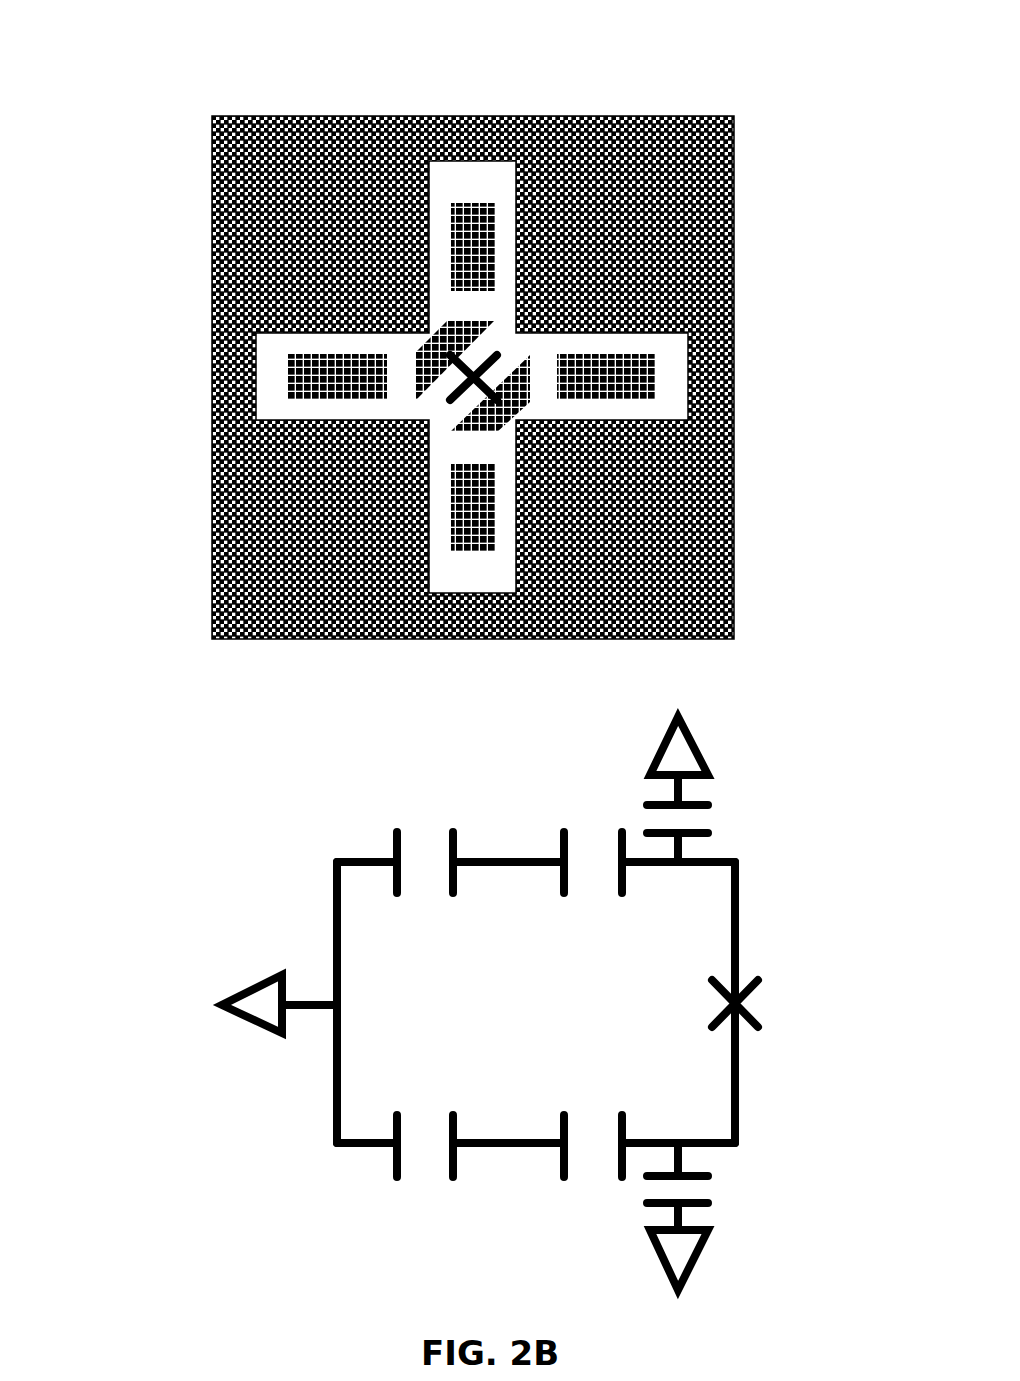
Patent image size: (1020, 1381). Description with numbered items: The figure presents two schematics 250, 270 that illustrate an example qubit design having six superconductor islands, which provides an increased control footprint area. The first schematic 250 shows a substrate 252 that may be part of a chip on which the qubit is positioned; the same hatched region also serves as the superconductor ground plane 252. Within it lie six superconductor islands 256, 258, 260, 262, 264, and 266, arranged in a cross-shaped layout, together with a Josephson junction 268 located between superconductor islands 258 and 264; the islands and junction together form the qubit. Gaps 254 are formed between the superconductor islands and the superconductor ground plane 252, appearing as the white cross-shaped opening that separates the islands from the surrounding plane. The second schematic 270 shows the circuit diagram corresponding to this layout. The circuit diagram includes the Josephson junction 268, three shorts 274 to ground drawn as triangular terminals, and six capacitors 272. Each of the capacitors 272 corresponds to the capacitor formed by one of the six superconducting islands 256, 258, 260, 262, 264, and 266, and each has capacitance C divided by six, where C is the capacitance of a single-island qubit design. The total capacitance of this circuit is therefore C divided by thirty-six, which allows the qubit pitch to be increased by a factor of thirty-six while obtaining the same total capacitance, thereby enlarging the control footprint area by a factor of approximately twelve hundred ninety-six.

The schematic 250 is at (117, 100).
The substrate 252 is at (661, 112).
The gaps 254 is at (474, 160).
The superconductor island 256 is at (337, 348).
The superconductor island 258 is at (436, 325).
The superconductor island 260 is at (469, 198).
The superconductor island 262 is at (609, 405).
The superconductor island 264 is at (508, 425).
The superconductor island 266 is at (476, 558).
The Josephson junction 268 is at (500, 345).
The schematic 270 is at (128, 785).
The capacitors 272 is at (700, 822).
The shorts to ground 274 is at (663, 738).